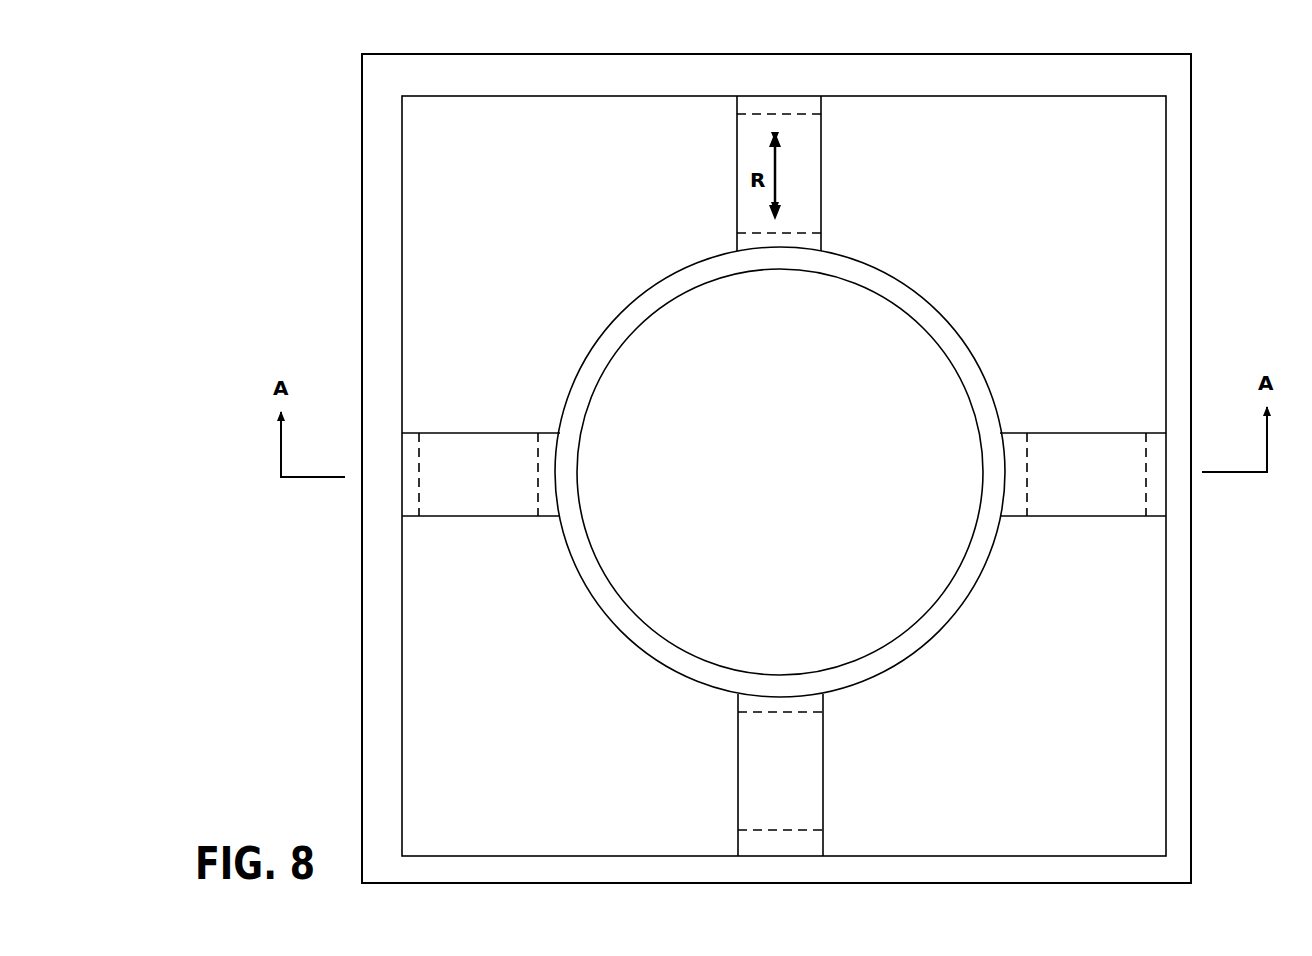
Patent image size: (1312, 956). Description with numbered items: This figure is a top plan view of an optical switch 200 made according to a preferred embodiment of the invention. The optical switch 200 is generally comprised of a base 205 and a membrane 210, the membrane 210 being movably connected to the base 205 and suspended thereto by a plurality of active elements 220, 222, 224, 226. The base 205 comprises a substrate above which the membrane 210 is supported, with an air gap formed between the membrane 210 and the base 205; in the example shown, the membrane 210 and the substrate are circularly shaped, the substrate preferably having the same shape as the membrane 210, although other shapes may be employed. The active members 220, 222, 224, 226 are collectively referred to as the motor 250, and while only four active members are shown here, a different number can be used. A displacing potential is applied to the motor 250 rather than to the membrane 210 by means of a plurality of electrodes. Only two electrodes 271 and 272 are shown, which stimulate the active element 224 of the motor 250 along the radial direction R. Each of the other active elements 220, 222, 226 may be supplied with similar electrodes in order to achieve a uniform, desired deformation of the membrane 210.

The optical switch 200 is at (803, 40).
The base 205 is at (701, 476).
The membrane 210 is at (800, 480).
The active element 220 is at (483, 498).
The active element 222 is at (1083, 450).
The active element 224 is at (834, 173).
The active element 226 is at (835, 775).
The motor 250 is at (595, 211).
The electrode 271 is at (747, 137).
The electrode 272 is at (780, 447).